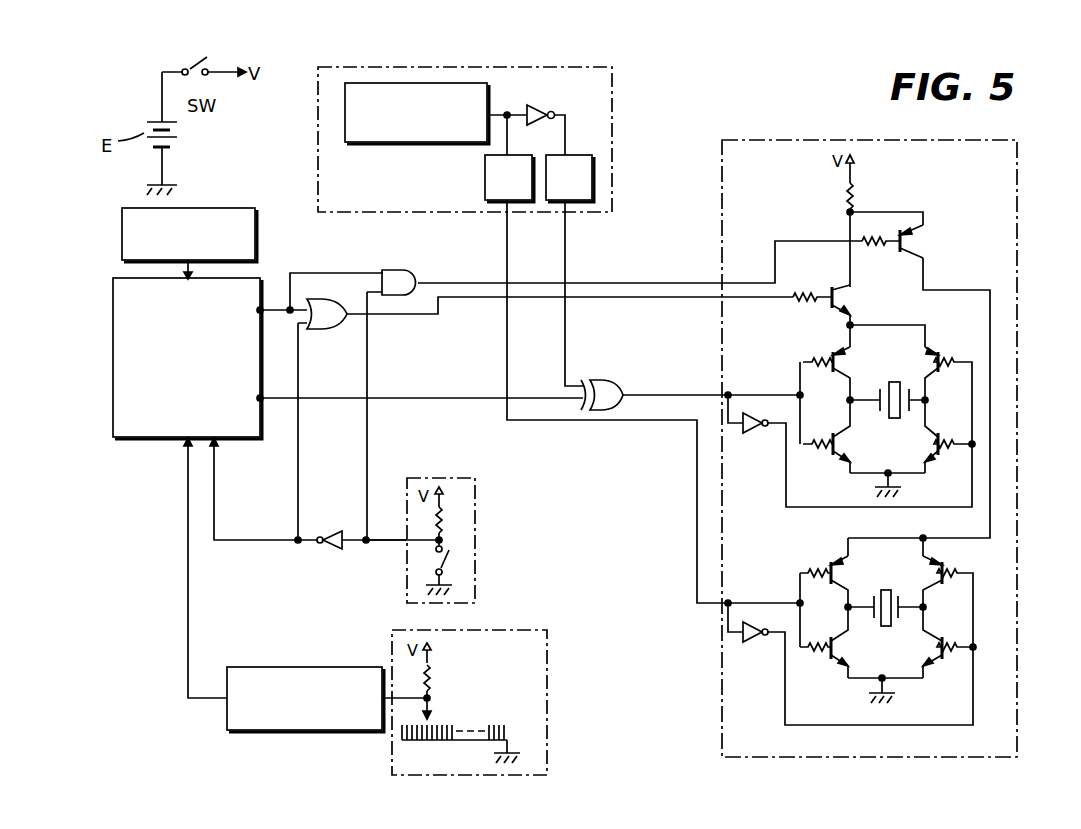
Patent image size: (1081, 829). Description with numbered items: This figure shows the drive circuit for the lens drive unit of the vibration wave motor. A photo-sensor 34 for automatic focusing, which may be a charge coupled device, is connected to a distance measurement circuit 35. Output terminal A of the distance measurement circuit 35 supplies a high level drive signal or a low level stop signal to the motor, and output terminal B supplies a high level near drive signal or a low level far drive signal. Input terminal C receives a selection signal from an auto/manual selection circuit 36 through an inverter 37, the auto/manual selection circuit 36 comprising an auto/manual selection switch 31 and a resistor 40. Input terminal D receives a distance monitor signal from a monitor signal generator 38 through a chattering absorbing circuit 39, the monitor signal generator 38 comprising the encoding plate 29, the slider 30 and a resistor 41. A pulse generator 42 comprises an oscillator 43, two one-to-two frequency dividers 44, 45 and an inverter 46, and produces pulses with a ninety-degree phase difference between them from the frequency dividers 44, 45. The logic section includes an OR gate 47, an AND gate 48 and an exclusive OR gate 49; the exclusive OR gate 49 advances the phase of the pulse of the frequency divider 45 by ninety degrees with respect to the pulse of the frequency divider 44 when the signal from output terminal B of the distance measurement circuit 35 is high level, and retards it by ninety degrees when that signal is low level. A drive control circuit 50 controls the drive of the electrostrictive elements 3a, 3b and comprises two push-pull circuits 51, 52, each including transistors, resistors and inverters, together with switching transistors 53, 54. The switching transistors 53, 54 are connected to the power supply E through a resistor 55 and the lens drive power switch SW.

The electrostrictive element 3a is at (965, 343).
The electrostrictive element 3b is at (965, 556).
The encoding plate 29 is at (413, 741).
The slider 30 is at (434, 710).
The auto/manual selection switch 31 is at (450, 556).
The photo-sensor 34 is at (216, 208).
The distance measurement circuit 35 is at (112, 331).
The auto/manual selection circuit 36 is at (451, 478).
The inverter 37 is at (333, 530).
The monitor signal generator 38 is at (548, 680).
The chattering absorbing circuit 39 is at (298, 732).
The resistor 40 is at (448, 525).
The resistor 41 is at (437, 673).
The pulse generator 42 is at (616, 127).
The oscillator 43 is at (488, 103).
The 1-to-2 frequency divider 44 is at (484, 173).
The 1-to-2 frequency divider 45 is at (592, 183).
The inverter 46 is at (543, 110).
The OR gate 47 is at (322, 330).
The AND gate 48 is at (404, 268).
The exclusive OR gate 49 is at (597, 380).
The drive control circuit 50 is at (757, 140).
The push-pull circuit 51 is at (900, 419).
The push-pull circuit 52 is at (897, 630).
The switching transistor 53 is at (912, 236).
The switching transistor 54 is at (845, 298).
The resistor 55 is at (860, 188).